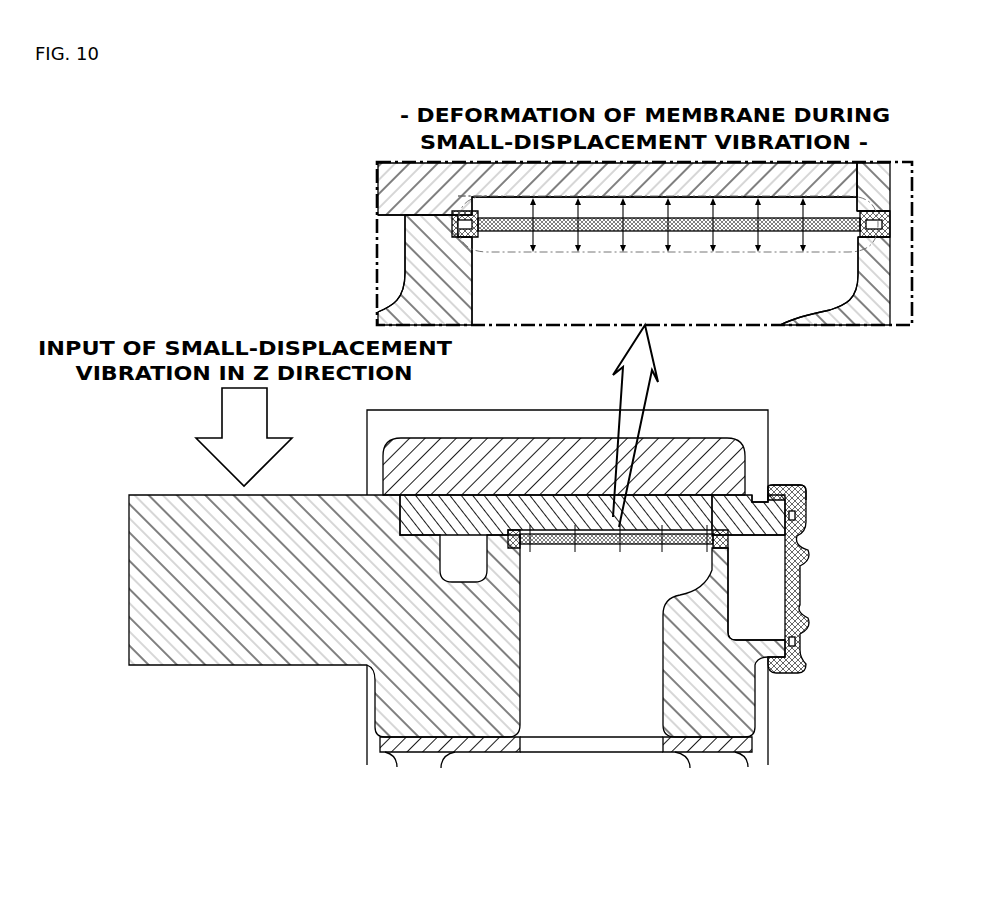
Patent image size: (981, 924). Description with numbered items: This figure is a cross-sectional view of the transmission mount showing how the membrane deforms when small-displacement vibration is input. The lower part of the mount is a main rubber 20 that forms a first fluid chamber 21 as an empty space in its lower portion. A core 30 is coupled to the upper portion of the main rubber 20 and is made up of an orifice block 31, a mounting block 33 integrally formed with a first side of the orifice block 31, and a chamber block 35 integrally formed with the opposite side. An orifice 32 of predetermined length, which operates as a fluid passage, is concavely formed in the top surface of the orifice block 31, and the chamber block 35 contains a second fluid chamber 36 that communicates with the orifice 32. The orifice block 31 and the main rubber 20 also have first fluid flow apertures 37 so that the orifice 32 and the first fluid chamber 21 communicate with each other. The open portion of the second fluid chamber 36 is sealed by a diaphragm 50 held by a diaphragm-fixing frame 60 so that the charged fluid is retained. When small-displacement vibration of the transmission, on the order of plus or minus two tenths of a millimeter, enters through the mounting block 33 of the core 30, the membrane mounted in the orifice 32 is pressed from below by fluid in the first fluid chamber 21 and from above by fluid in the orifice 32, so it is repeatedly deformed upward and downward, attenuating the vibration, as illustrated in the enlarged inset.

The main rubber 20 is at (755, 742).
The first fluid chamber 21 is at (592, 760).
The core 30 is at (290, 697).
The orifice block 31 is at (412, 713).
The orifice 32 is at (468, 552).
The mounting block 33 is at (193, 668).
The chamber block 35 is at (760, 497).
The second fluid chamber 36 is at (762, 600).
The first fluid flow aperture 37 is at (553, 708).
The diaphragm 50 is at (793, 560).
The diaphragm-fixing frame 60 is at (800, 487).